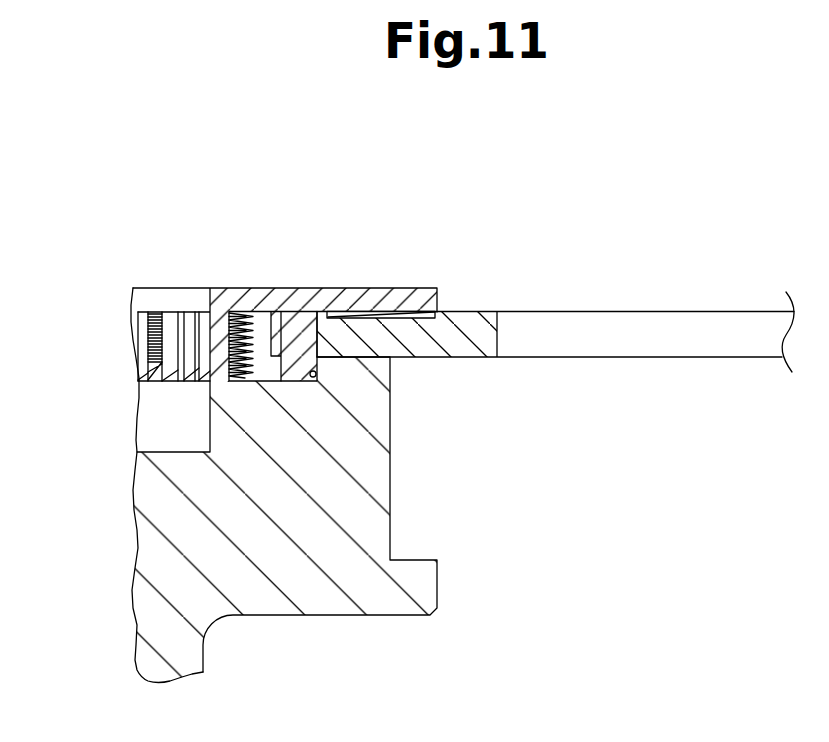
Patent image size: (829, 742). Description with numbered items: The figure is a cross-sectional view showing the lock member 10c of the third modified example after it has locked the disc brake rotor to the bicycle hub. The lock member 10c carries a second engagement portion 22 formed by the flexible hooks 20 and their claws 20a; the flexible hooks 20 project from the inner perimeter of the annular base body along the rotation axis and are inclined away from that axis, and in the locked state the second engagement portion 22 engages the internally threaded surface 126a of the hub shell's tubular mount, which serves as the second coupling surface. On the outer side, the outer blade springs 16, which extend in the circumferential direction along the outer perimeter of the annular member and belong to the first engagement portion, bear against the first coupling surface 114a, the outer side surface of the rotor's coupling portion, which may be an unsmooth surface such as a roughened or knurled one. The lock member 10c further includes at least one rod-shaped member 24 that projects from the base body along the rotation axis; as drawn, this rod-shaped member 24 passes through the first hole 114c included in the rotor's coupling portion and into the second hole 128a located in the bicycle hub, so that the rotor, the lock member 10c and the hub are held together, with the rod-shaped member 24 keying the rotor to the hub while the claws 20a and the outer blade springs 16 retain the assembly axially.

The lock member 10c is at (148, 296).
The internally threaded surface 126a is at (236, 342).
The first hole 114c is at (306, 334).
The first coupling surface 114a is at (357, 311).
The outer blade springs 16 is at (555, 307).
The second hole 128a is at (316, 374).
The rod-shaped member 24 is at (300, 408).
The second engagement portion 22 is at (128, 367).
The flexible hooks 20 is at (213, 343).
The claws 20a is at (228, 380).